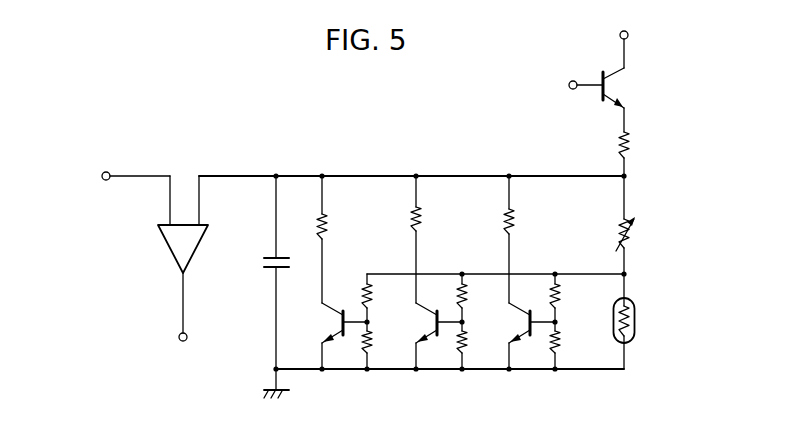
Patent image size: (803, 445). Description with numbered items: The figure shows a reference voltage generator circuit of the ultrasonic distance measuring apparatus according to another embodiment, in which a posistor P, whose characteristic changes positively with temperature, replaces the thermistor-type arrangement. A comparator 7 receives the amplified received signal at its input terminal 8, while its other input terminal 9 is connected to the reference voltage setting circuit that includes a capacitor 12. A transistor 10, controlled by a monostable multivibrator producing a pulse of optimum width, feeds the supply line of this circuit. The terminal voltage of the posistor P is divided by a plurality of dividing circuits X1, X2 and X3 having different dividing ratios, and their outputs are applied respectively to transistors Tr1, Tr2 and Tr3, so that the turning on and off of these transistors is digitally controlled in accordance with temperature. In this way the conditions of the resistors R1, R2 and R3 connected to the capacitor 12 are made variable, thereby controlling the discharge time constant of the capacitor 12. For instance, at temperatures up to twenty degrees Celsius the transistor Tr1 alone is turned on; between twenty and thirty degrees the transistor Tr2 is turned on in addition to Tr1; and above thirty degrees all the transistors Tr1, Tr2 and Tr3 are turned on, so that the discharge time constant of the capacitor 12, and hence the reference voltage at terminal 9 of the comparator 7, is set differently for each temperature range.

The comparator 7 is at (194, 246).
The input terminal 8 is at (157, 176).
The other input terminal 9 is at (228, 176).
The transistor 10 is at (617, 90).
The capacitor 12 is at (264, 264).
The resistor R1 is at (334, 224).
The resistor R2 is at (426, 220).
The resistor R3 is at (520, 222).
The dividing circuit X1 is at (374, 308).
The dividing circuit X2 is at (464, 308).
The dividing circuit X3 is at (558, 308).
The transistor Tr1 is at (323, 323).
The transistor Tr2 is at (416, 323).
The transistor Tr3 is at (510, 323).
The posistor P is at (637, 321).